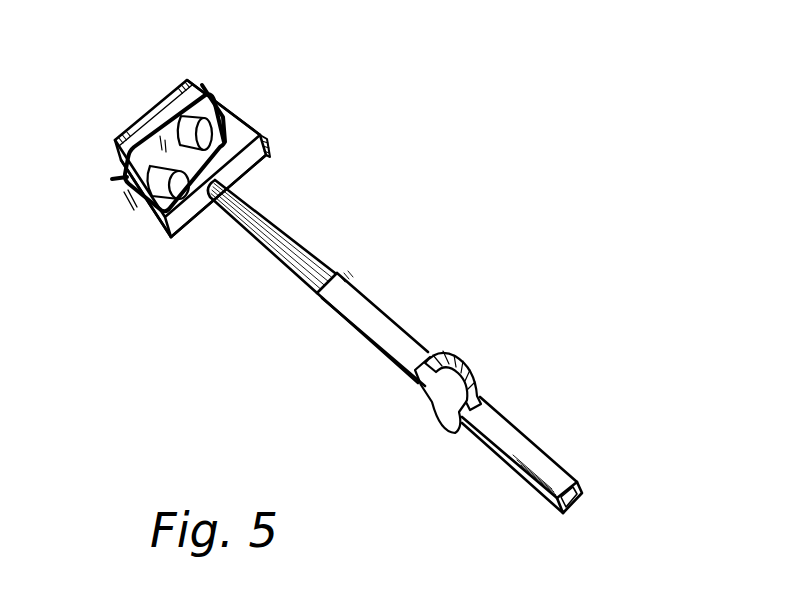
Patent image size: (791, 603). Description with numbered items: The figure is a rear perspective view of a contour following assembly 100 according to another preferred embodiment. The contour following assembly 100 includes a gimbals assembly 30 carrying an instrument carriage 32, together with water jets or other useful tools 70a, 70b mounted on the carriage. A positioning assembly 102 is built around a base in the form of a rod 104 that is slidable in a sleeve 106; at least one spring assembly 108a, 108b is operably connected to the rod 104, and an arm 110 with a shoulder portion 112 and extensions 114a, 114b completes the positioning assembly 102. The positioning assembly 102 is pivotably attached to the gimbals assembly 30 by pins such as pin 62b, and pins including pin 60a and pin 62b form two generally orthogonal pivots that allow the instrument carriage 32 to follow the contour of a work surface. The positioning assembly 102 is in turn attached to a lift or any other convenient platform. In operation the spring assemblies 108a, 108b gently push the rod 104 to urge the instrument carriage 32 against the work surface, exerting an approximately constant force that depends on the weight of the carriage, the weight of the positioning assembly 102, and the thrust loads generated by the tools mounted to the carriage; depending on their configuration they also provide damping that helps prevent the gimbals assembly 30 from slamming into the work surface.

The gimbals assembly 30 is at (189, 79).
The instrument carriage 32 is at (147, 152).
The pin 60a is at (160, 117).
The pin 62b is at (120, 180).
The water jet 70a is at (212, 93).
The water jet 70b is at (126, 178).
The contour following assembly 100 is at (447, 217).
The positioning assembly 102 is at (349, 327).
The rod 104 is at (308, 250).
The sleeve 106 is at (547, 453).
The spring assembly 108a is at (457, 360).
The spring assembly 108b is at (423, 393).
The arm 110 is at (197, 215).
The shoulder portion 112 is at (257, 168).
The extension 114a is at (243, 118).
The extension 114b is at (167, 228).